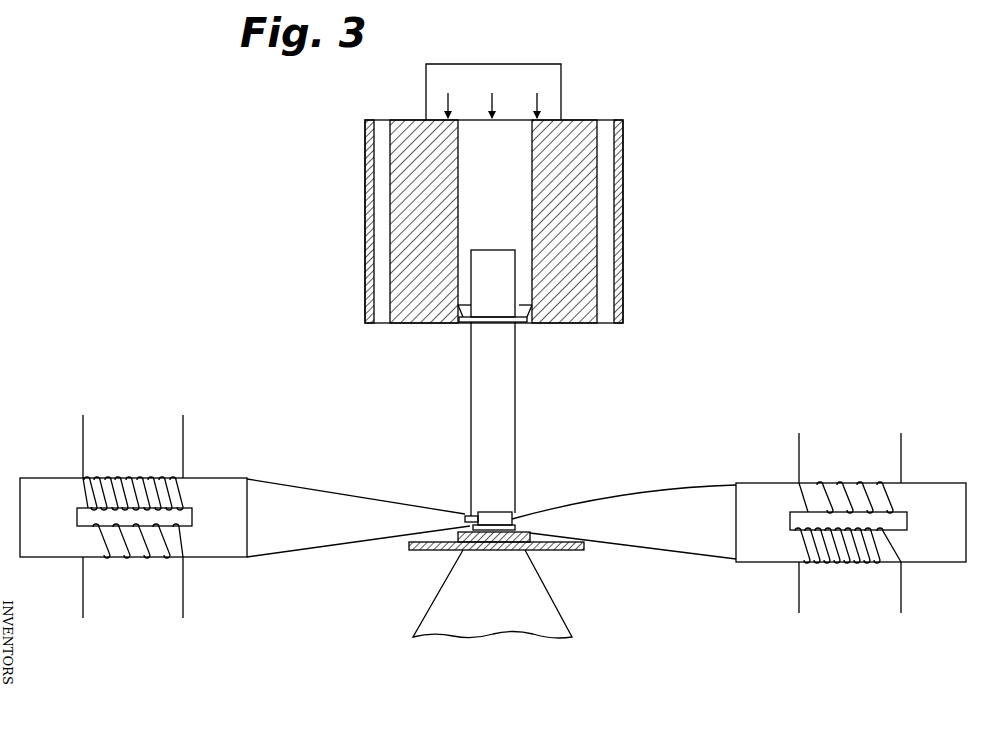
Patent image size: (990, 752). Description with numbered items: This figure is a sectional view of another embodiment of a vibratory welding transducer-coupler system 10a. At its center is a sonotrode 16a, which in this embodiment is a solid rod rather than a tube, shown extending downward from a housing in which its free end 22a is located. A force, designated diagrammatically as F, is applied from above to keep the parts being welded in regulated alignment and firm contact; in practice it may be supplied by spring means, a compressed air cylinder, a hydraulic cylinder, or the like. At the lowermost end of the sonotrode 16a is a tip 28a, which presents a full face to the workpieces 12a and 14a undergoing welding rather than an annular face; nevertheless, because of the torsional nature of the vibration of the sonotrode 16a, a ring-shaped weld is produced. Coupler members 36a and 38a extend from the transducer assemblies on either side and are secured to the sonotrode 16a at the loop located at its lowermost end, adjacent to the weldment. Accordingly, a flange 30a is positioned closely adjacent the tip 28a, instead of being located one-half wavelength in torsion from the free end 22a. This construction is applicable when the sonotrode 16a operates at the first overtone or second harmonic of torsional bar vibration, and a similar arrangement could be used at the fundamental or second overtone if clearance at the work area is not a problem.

The vibratory welding transducer-coupler system 10a is at (313, 592).
The workpiece 12a is at (533, 535).
The workpiece 14a is at (567, 553).
The sonotrode 16a is at (508, 390).
The free end 22a is at (495, 250).
The tip 28a is at (503, 522).
The flange 30a is at (465, 513).
The coupler member 36a is at (358, 497).
The coupler member 38a is at (650, 506).